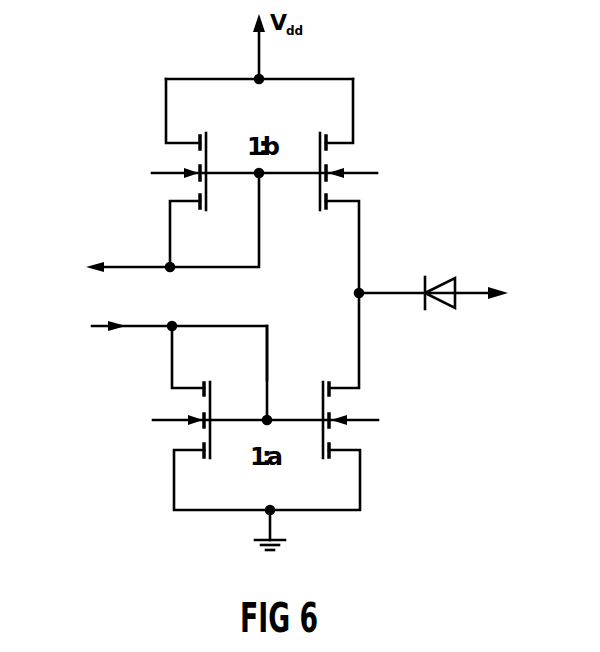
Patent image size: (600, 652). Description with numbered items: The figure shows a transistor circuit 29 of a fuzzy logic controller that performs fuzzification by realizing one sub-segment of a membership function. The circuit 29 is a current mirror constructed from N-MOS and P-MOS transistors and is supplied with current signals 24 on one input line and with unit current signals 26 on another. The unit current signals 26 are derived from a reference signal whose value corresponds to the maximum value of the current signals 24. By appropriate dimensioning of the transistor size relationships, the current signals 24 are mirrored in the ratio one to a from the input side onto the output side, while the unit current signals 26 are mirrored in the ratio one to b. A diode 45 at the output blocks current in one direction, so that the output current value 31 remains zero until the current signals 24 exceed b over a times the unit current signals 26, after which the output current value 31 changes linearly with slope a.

The unit current signal 26 is at (148, 242).
The current signal 24 is at (155, 332).
The transistor circuit 29 is at (146, 447).
The diode 45 is at (441, 280).
The output current value 31 is at (477, 290).